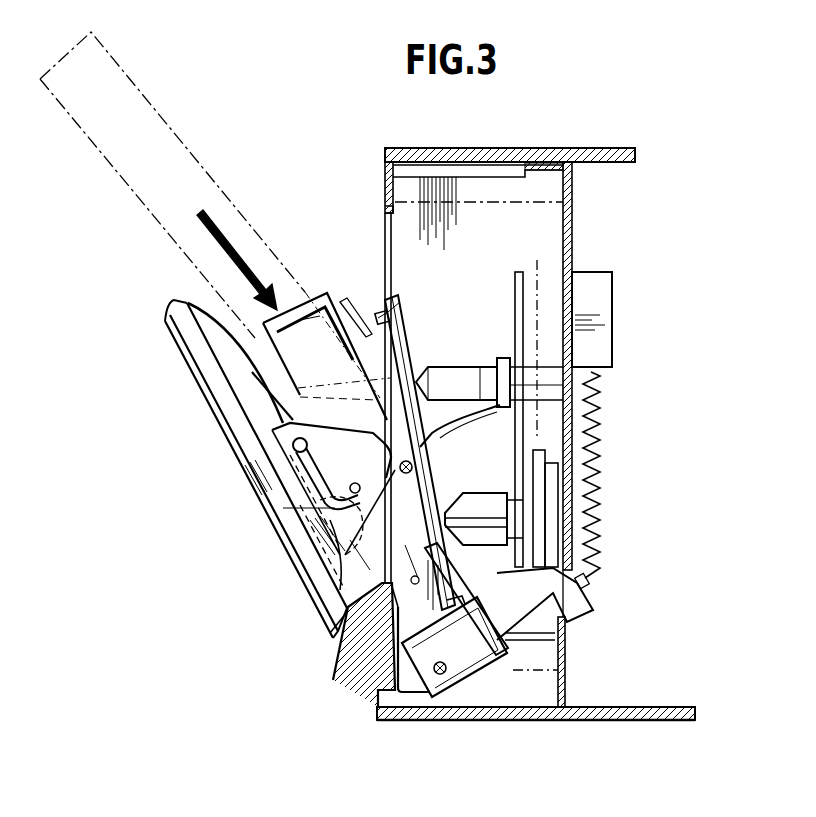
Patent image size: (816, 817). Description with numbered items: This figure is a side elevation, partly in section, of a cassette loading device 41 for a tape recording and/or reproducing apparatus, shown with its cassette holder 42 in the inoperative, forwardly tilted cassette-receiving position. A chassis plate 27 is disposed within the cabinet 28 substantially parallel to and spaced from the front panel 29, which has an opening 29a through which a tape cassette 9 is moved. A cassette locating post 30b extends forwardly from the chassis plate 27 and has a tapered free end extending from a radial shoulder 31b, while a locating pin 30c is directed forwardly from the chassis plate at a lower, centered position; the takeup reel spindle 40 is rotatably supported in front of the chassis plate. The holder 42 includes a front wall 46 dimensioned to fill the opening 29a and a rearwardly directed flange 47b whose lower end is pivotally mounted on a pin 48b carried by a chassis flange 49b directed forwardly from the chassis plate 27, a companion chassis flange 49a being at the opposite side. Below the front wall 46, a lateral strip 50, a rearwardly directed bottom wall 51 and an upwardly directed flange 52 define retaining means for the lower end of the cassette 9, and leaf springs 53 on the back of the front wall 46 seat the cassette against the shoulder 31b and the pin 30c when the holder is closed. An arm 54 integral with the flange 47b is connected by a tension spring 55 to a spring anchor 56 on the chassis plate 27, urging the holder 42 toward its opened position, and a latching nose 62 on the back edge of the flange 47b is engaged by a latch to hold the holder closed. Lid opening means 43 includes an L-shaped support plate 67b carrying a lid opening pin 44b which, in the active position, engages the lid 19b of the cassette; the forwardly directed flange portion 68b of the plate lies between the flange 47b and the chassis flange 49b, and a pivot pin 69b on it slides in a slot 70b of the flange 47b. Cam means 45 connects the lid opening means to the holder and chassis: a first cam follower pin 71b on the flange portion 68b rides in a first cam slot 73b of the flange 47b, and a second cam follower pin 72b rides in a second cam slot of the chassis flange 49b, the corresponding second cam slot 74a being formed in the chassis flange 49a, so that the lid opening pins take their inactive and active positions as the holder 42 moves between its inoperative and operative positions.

The cabinet 28 is at (598, 145).
The front panel 29 is at (385, 172).
The opening 29a is at (388, 212).
The chassis flange 49a is at (515, 185).
The chassis flange 49b is at (565, 192).
The chassis plate 27 is at (570, 240).
The lid opening pin 44b is at (400, 302).
The radial shoulder 31b is at (600, 365).
The cassette locating post 30b is at (463, 366).
The spring anchor 56 is at (612, 304).
The tension spring 55 is at (598, 540).
The reel mounting member or spindle 40 is at (510, 494).
The latching nose 62 is at (450, 485).
The second cam slot 74a is at (472, 412).
The support plate 67b is at (400, 347).
The second cam follower pin 72b is at (412, 466).
The pivot pin 69b is at (446, 548).
The pin 48b is at (437, 703).
The bottom wall 51 is at (517, 718).
The lateral strip 50 is at (390, 715).
The arm 54 is at (560, 630).
The locating pin 30c is at (560, 658).
The upwardly directed flange 52 is at (568, 685).
The cassette loading device 41 is at (275, 195).
The tape cassette 9 is at (323, 294).
The lid 19b is at (318, 318).
The lid opening means 43 is at (362, 333).
The front wall 46 is at (220, 402).
The flange 47b is at (250, 447).
The first cam slot 73b is at (312, 453).
The cassette holder 42 is at (233, 470).
The first cam follower pin 71b is at (283, 508).
The leaf springs 53 is at (333, 527).
The cam means 45 is at (330, 530).
The flange portion 68b is at (337, 617).
The slot 70b is at (330, 633).